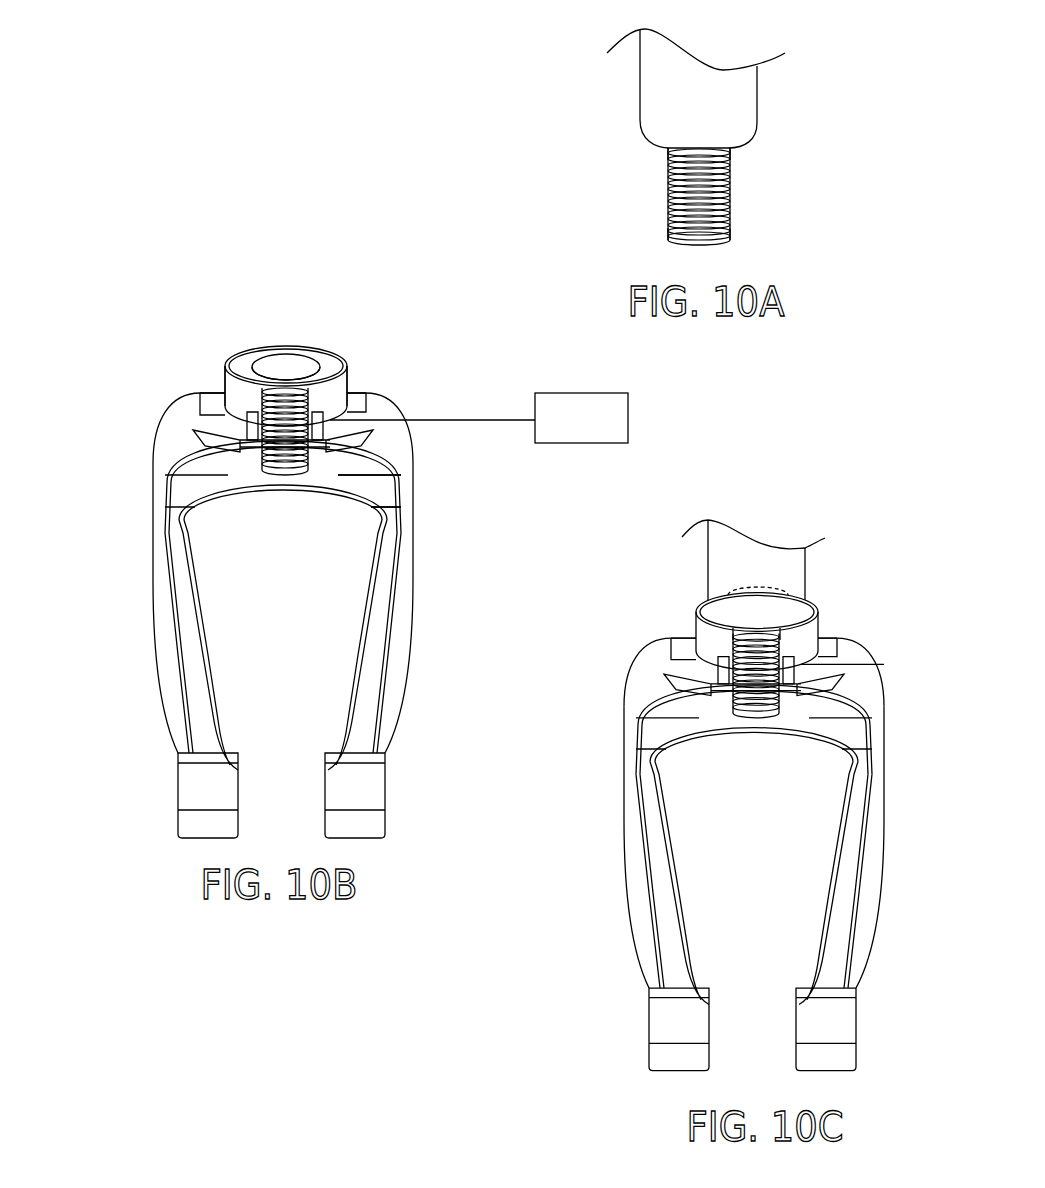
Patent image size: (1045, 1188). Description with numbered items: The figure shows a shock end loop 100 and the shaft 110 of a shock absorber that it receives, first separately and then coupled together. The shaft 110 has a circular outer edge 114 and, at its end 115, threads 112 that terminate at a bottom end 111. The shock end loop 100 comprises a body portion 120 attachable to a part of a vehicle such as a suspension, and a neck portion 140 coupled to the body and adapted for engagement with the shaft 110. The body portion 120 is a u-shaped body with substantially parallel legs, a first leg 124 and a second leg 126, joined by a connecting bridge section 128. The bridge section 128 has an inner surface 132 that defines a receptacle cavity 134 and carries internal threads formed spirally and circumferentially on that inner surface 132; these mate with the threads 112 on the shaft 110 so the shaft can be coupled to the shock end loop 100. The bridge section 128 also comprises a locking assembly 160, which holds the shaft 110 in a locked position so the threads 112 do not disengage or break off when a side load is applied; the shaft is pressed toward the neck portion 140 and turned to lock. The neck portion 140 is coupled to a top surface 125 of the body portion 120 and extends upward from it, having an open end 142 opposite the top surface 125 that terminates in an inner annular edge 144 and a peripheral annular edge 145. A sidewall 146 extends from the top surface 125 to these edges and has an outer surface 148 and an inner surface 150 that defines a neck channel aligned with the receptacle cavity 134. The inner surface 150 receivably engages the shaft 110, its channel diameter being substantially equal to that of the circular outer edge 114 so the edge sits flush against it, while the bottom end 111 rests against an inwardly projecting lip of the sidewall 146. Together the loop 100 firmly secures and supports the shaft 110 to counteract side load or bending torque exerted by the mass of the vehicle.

In FIG. 10B, the shock end loop 100 is at (232, 340).
In FIG. 10C, the shock end loop 100 is at (663, 618).
In FIG. 10A, the shaft 110 is at (612, 102).
In FIG. 10C, the shaft 110 is at (800, 562).
In FIG. 10A, the bottom end 111 is at (642, 152).
In FIG. 10C, the bottom end 111 is at (730, 632).
In FIG. 10A, the threads 112 is at (732, 183).
In FIG. 10A, the circular outer edge 114 is at (760, 102).
In FIG. 10A, the end 115 is at (640, 232).
In FIG. 10B, the body portion 120 is at (137, 533).
In FIG. 10C, the body portion 120 is at (619, 700).
In FIG. 10B, the first leg 124 is at (165, 630).
In FIG. 10C, the first leg 124 is at (640, 855).
In FIG. 10B, the top surface 125 is at (362, 412).
In FIG. 10C, the top surface 125 is at (827, 648).
In FIG. 10B, the second leg 126 is at (400, 632).
In FIG. 10C, the second leg 126 is at (873, 840).
In FIG. 10B, the bridge section 128 is at (233, 417).
In FIG. 10C, the bridge section 128 is at (725, 652).
In FIG. 10B, the inner surface 132 is at (393, 483).
In FIG. 10B, the receptacle cavity 134 is at (253, 350).
In FIG. 10B, the neck portion 140 is at (350, 375).
In FIG. 10C, the neck portion 140 is at (694, 612).
In FIG. 10B, the open end 142 is at (279, 360).
In FIG. 10B, the inner annular edge 144 is at (300, 345).
In FIG. 10B, the peripheral annular edge 145 is at (247, 395).
In FIG. 10C, the peripheral annular edge 145 is at (754, 684).
In FIG. 10B, the sidewall 146 is at (259, 345).
In FIG. 10C, the sidewall 146 is at (818, 592).
In FIG. 10B, the outer surface 148 is at (200, 396).
In FIG. 10C, the outer surface 148 is at (703, 633).
In FIG. 10B, the inner surface 150 is at (305, 355).
In FIG. 10C, the inner surface 150 is at (756, 675).
In FIG. 10B, the locking assembly 160 is at (650, 419).